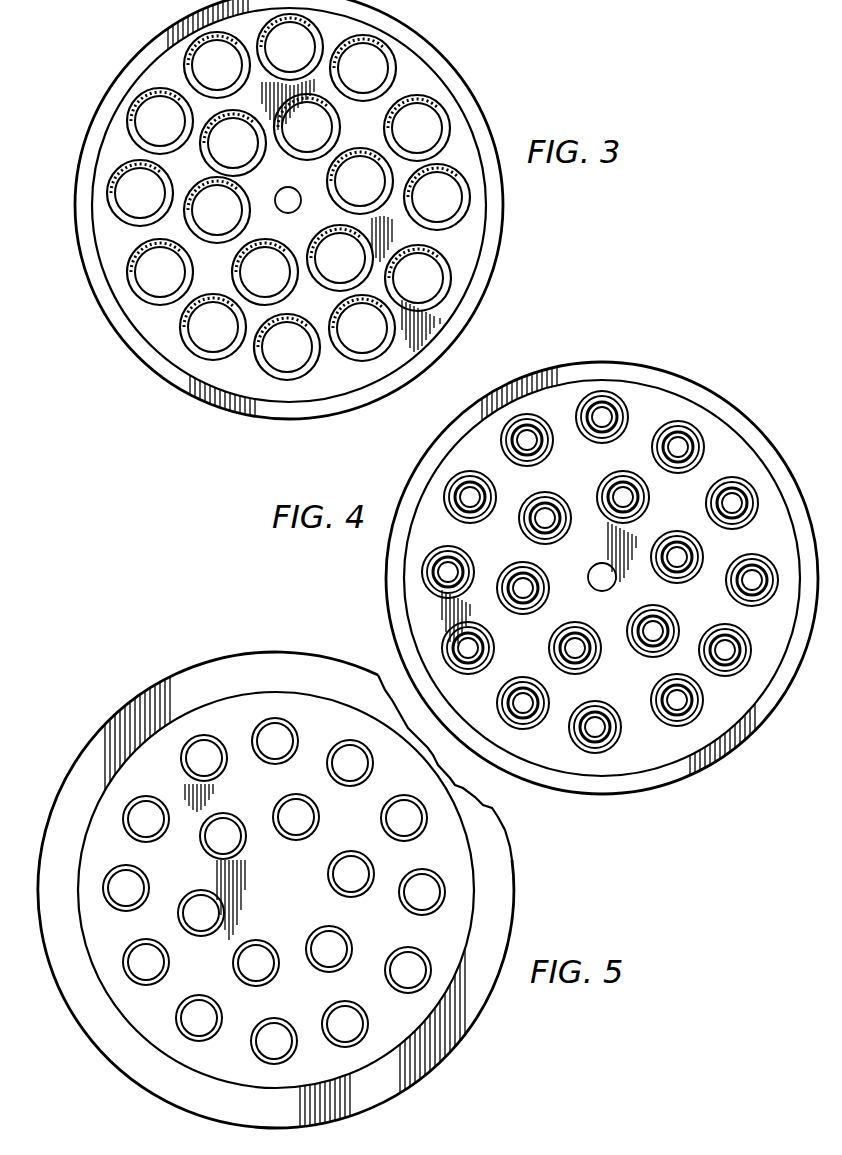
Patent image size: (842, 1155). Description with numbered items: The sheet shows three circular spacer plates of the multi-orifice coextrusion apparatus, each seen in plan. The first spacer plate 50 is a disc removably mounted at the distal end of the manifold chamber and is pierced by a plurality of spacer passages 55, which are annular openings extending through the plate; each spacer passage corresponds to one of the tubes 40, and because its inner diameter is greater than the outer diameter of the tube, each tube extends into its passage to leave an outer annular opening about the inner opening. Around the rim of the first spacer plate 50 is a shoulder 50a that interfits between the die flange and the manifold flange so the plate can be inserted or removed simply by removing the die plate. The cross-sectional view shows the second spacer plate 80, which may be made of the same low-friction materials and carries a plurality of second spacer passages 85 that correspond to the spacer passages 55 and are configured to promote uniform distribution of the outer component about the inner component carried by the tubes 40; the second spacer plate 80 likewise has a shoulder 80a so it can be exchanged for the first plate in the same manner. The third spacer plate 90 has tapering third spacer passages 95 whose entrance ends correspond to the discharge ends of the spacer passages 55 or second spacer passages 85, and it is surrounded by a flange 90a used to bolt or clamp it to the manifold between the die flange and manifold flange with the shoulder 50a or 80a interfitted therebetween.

In FIG. 3, the first spacer plate 50 is at (162, 327).
In FIG. 3, the shoulder 50a is at (480, 112).
In FIG. 3, the spacer passages 55 is at (201, 78).
In FIG. 4, the second spacer plate 80 is at (715, 457).
In FIG. 4, the shoulder 80a is at (700, 397).
In FIG. 4, the second spacer passages 85 is at (602, 503).
In FIG. 4, the tubes 40 is at (508, 568).
In FIG. 5, the third spacer plate 90 is at (270, 700).
In FIG. 5, the flange 90a is at (167, 682).
In FIG. 5, the third spacer passages 95 is at (234, 814).